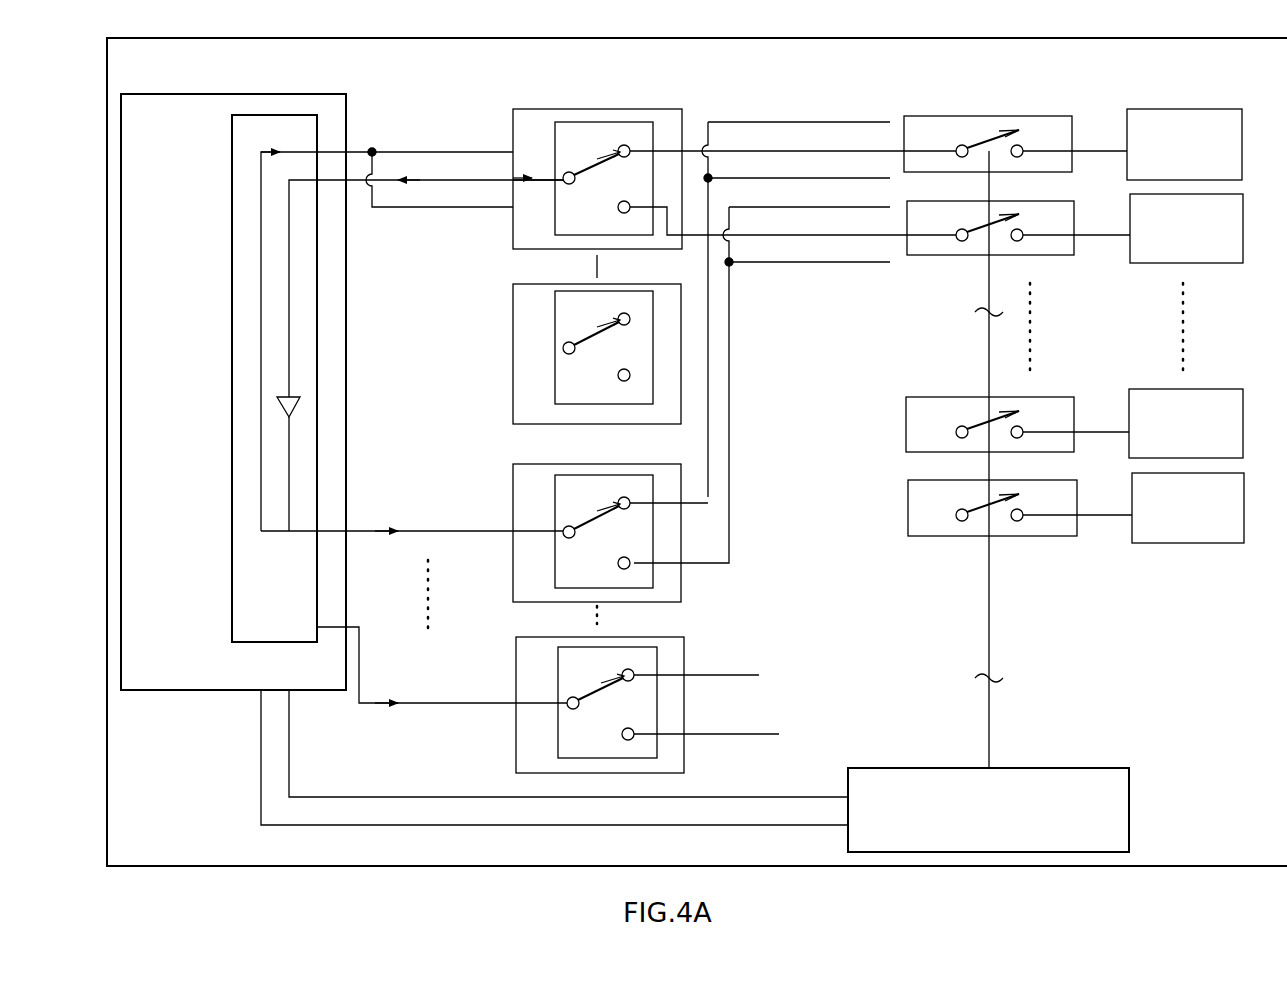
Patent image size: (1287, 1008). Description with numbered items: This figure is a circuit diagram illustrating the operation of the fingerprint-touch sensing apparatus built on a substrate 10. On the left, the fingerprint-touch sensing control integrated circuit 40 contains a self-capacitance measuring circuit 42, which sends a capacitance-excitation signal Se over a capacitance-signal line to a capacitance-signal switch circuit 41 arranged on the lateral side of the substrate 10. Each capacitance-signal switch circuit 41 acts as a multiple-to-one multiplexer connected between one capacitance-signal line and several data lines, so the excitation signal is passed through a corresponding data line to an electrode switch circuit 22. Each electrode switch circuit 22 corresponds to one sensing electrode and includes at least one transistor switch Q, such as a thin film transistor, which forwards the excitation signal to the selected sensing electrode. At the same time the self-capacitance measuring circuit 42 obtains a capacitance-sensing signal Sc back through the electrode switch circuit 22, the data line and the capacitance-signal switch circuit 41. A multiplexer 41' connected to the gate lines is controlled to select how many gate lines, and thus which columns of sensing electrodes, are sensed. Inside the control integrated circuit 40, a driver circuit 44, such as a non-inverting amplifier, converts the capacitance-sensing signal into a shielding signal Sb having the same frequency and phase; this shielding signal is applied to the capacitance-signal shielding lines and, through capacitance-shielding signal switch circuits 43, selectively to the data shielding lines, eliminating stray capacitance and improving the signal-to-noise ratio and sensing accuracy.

The substrate 10 is at (826, 48).
The electrode switch circuit 22 is at (1074, 326).
The fingerprint-touch sensing control integrated circuit 40 is at (195, 105).
The capacitance-signal switch circuit 41 is at (553, 240).
The multiplexer 41' is at (995, 790).
The self-capacitance measuring circuit 42 is at (237, 379).
The capacitance-shielding signal switch circuit 43 is at (513, 481).
The driver circuit 44 is at (296, 408).
The transistor switch Q is at (1018, 157).